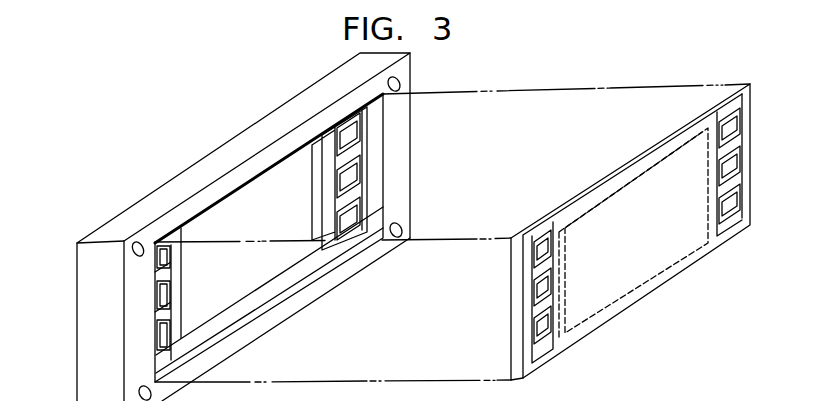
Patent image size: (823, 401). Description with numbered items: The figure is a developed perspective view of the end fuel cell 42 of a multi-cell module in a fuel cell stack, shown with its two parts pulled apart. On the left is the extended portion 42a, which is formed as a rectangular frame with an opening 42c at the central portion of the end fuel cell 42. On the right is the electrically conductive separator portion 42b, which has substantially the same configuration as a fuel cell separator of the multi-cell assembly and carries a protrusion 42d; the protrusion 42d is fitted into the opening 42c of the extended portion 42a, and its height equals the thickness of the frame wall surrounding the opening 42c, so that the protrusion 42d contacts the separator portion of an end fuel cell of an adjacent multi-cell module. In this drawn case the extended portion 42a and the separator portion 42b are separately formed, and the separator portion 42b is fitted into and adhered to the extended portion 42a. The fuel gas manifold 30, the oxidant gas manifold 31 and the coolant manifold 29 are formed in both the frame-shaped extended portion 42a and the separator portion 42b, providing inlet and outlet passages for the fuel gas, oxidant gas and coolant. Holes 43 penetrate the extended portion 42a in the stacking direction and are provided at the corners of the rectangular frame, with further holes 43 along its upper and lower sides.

The end fuel cell 42 is at (205, 158).
The extended portion 42a is at (327, 75).
The separator portion 42b is at (578, 196).
The opening 42c is at (250, 292).
The protrusion 42d is at (640, 287).
The holes 43 is at (140, 242).
The coolant manifold 29 is at (155, 300).
The fuel gas manifold 30 is at (155, 343).
The oxidant gas manifold 31 is at (155, 262).